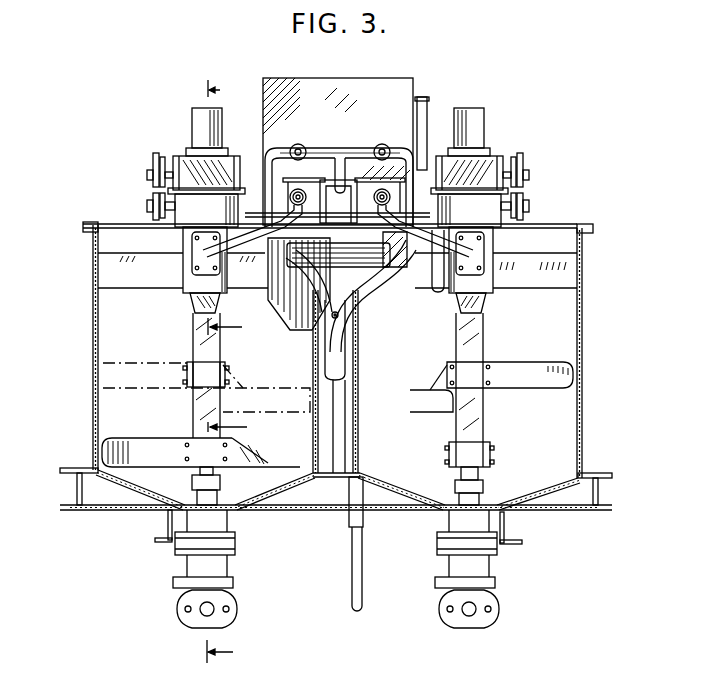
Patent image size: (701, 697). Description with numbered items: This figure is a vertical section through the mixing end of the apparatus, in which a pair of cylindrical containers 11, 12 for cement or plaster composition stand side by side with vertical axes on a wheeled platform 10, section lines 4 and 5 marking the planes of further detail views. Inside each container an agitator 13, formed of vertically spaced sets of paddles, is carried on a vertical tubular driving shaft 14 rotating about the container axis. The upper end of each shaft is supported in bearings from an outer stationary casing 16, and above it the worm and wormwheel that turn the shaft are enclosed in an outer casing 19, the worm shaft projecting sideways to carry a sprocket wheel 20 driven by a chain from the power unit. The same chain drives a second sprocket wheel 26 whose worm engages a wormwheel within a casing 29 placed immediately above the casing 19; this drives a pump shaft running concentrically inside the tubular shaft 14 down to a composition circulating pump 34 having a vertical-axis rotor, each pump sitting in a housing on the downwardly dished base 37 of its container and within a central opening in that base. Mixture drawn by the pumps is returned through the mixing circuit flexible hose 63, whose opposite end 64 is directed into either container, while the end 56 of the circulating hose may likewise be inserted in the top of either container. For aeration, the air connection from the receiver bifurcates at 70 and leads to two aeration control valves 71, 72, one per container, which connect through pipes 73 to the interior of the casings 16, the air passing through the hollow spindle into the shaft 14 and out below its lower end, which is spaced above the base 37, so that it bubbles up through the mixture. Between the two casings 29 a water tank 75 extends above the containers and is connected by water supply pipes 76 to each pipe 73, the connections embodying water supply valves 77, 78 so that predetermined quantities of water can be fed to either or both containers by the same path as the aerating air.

The section line 4- 4 is at (225, 199).
The section line 5- 5 is at (233, 540).
The wheeled platform 10 is at (600, 495).
The container 11 is at (93, 325).
The container 12 is at (582, 344).
The agitator 13 is at (188, 443).
The tubular driving shaft 14 is at (193, 350).
The outer stationary casing 16 is at (190, 280).
The outer casing 19 is at (188, 214).
The sprocket wheel 20 is at (148, 208).
The sprocket wheel 26 is at (152, 163).
The casing 29 is at (193, 162).
The composition circulating pump 34 is at (238, 555).
The downwardly dished base 37 is at (128, 485).
The end of circulating hose 56 is at (330, 285).
The mixing circuit flexible hose 63 is at (363, 598).
The end of mixing circuit hose 64 is at (368, 277).
The bifurcation 70 is at (338, 148).
The aeration control valve 71 is at (292, 143).
The aeration valve 72 is at (383, 144).
The pipe 73 is at (265, 172).
The water tank 75 is at (407, 86).
The water supply pipe 76 is at (440, 265).
The water supply valve 77 is at (301, 189).
The water supply valve 78 is at (380, 189).